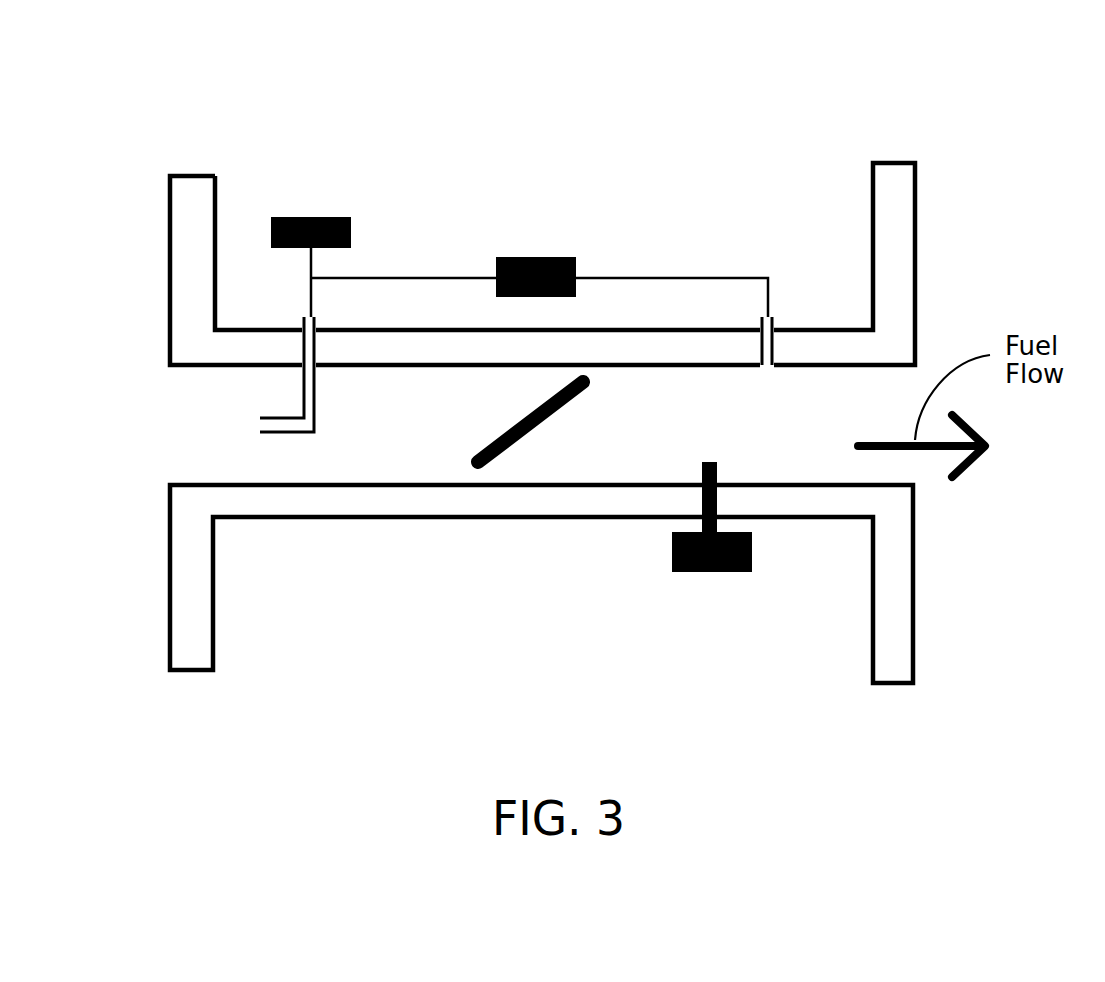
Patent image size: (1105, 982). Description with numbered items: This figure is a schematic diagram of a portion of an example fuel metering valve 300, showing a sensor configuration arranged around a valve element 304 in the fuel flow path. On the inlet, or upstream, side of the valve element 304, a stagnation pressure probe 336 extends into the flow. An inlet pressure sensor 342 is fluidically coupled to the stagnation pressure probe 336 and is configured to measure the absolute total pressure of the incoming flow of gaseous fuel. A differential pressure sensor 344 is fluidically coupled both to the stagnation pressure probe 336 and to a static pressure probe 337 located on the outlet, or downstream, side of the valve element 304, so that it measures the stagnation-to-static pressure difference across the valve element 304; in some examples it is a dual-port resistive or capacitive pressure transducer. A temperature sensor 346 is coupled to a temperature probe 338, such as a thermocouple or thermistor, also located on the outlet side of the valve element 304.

The fuel metering valve 300 is at (184, 119).
The valve element 304 is at (580, 398).
The stagnation pressure probe 336 is at (316, 388).
The static pressure probe 337 is at (774, 318).
The temperature probe 338 is at (718, 467).
The inlet pressure sensor 342 is at (312, 217).
The differential pressure sensor 344 is at (535, 258).
The temperature sensor 346 is at (712, 572).